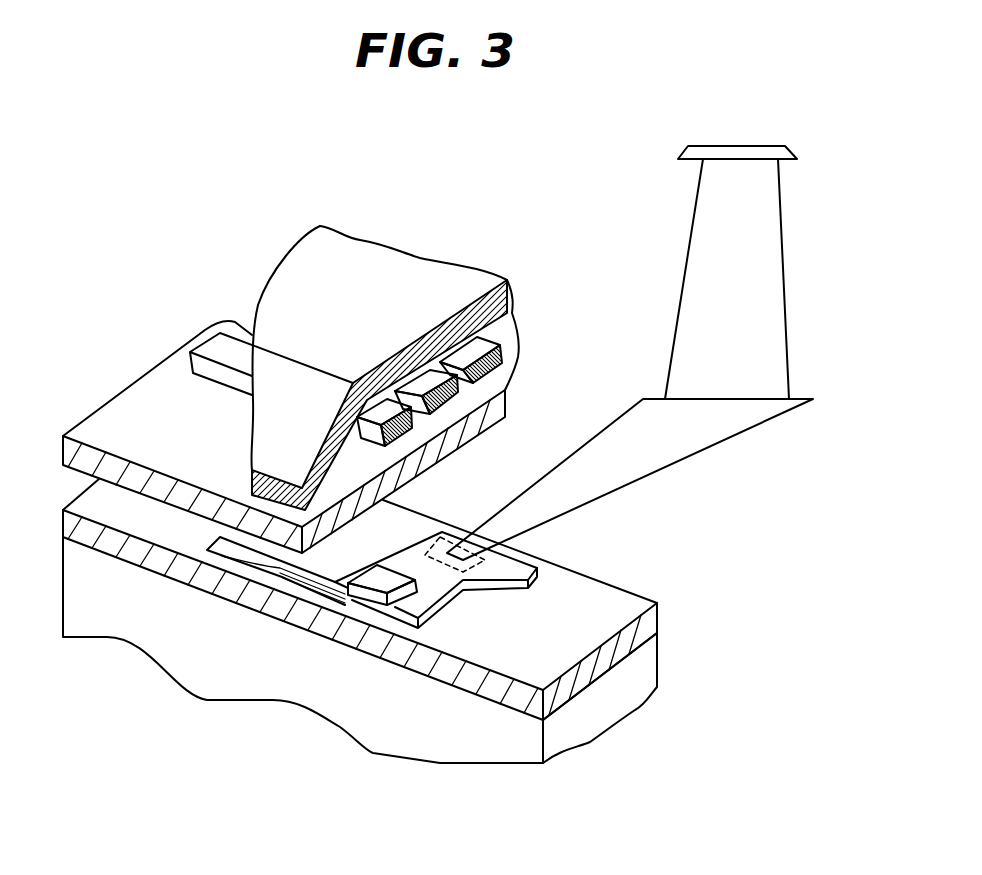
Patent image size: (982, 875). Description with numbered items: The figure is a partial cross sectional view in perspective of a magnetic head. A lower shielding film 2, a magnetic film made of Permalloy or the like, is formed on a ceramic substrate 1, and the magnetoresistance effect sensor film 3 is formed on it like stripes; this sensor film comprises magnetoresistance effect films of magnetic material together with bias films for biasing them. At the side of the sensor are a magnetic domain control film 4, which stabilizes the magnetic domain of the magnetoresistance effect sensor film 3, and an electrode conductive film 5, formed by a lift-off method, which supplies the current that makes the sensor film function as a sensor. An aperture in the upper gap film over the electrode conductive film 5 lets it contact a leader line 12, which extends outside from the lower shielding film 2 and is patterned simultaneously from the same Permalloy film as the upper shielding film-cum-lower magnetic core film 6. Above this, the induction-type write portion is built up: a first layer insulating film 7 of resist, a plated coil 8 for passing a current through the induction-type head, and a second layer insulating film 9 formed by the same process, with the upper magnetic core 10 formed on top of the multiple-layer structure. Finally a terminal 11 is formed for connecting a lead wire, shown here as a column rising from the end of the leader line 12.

The ceramic substrate 1 is at (610, 722).
The lower shielding film 2 is at (150, 560).
The magnetoresistance effect sensor film 3 is at (287, 587).
The magnetic domain control film 4 is at (355, 602).
The electrode conductive film 5 is at (516, 567).
The upper shielding film-cum-lower magnetic core film 6 is at (490, 408).
The first layer insulating film 7 is at (473, 393).
The coil 8 is at (487, 352).
The second layer insulating film 9 is at (488, 343).
The upper magnetic core 10 is at (353, 262).
The terminal 11 is at (770, 265).
The leader line 12 is at (653, 463).